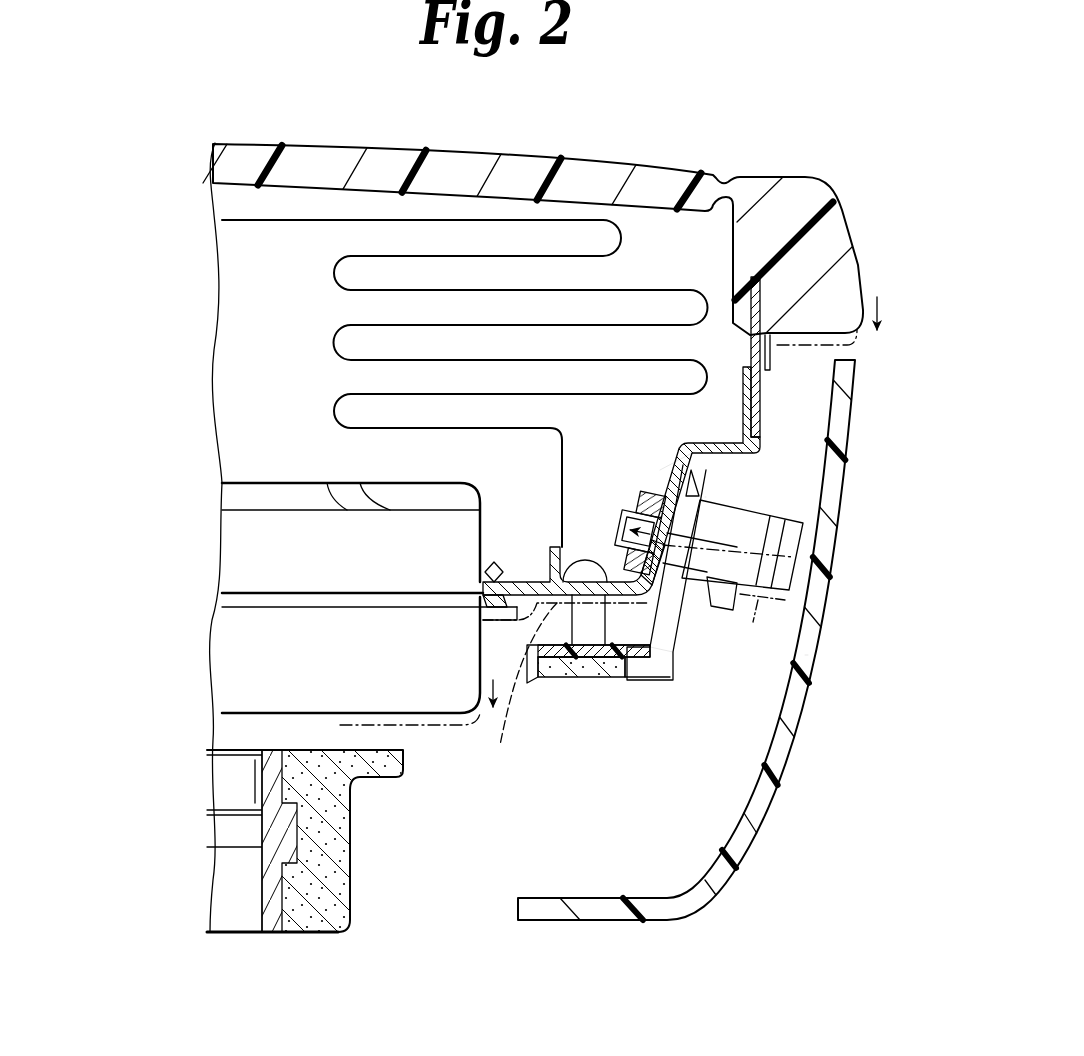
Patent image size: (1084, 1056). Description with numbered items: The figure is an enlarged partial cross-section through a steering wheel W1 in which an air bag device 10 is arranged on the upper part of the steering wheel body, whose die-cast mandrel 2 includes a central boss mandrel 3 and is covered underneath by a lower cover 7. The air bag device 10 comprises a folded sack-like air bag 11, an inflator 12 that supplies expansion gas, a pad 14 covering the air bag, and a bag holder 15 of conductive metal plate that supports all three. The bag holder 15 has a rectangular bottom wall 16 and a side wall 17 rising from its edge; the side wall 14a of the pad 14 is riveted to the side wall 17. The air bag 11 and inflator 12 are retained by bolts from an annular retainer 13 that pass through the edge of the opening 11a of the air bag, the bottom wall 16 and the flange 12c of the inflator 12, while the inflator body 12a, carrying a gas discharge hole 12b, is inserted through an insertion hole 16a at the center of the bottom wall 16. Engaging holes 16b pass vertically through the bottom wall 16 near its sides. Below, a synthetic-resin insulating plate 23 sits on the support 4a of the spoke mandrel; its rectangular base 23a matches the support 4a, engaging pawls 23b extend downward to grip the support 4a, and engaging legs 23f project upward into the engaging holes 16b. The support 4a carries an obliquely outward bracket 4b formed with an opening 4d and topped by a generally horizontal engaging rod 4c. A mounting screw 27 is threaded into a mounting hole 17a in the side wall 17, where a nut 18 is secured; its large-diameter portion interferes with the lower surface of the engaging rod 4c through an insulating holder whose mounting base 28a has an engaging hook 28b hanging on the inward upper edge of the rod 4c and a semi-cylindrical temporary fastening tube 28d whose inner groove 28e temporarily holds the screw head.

The mandrel 2 is at (333, 950).
The boss mandrel 3 is at (295, 920).
The support 4a is at (680, 678).
The bracket 4b is at (805, 655).
The engaging rod 4c is at (705, 497).
The opening 4d is at (861, 653).
The lower cover 7 is at (713, 890).
The air bag device 10 is at (138, 155).
The air bag 11 is at (236, 222).
The opening of the air bag 11a is at (487, 575).
The inflator 12 is at (206, 526).
The inflator body 12a is at (232, 564).
The gas discharge hole 12b is at (259, 494).
The flange 12c is at (232, 608).
The retainer 13 is at (532, 580).
The pad 14 is at (224, 170).
The side wall of the pad 14a is at (760, 405).
The bag holder 15 is at (483, 620).
The bottom wall 16 is at (514, 601).
The insertion hole 16a is at (478, 586).
The engaging hole 16b is at (496, 730).
The side wall 17 is at (690, 448).
The mounting hole 17a is at (690, 493).
The nut 18 is at (633, 505).
The insulating plate 23 is at (632, 662).
The base 23a is at (610, 717).
The engaging pawl 23b is at (533, 683).
The engaging leg 23f is at (592, 640).
The mounting screw 27 is at (762, 598).
The mounting base 28a is at (680, 480).
The engaging hook 28b is at (715, 490).
The temporary fastening tube 28d is at (803, 522).
The groove 28e is at (792, 560).
The steering wheel W1 is at (789, 115).